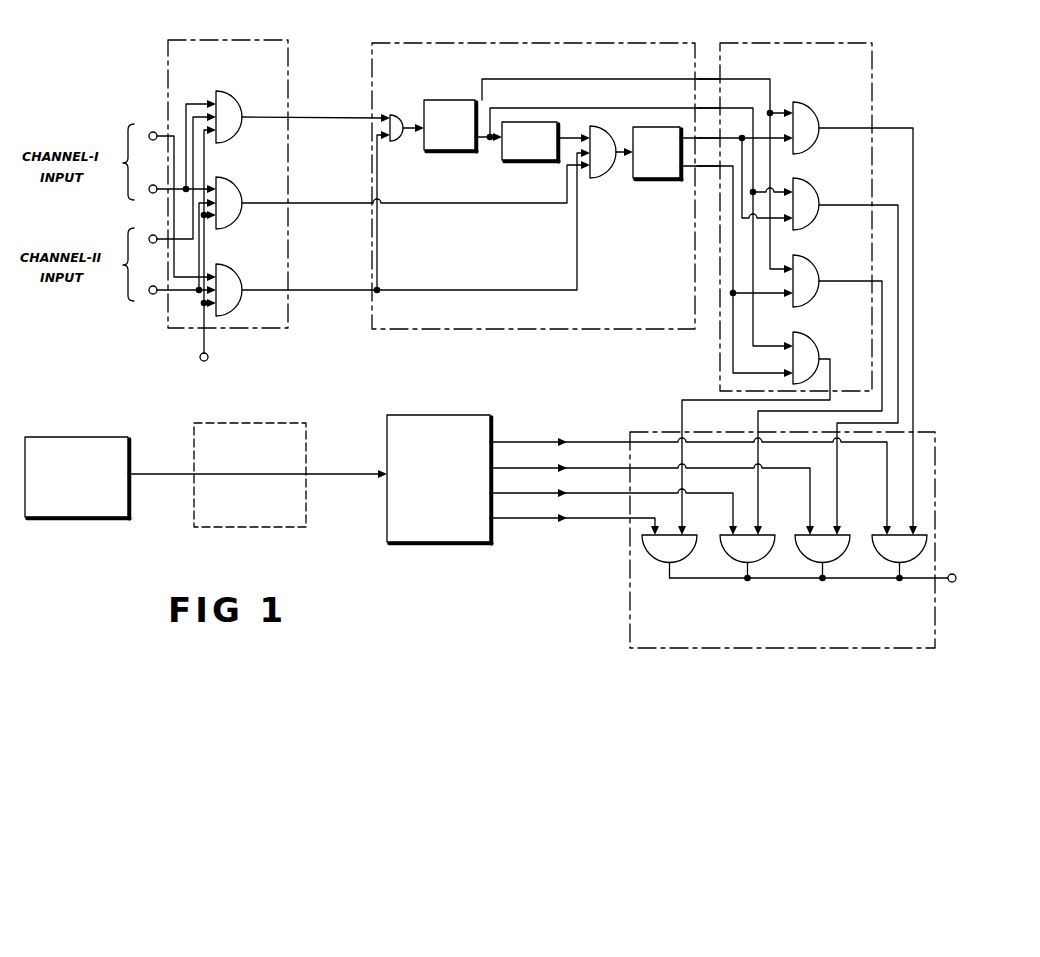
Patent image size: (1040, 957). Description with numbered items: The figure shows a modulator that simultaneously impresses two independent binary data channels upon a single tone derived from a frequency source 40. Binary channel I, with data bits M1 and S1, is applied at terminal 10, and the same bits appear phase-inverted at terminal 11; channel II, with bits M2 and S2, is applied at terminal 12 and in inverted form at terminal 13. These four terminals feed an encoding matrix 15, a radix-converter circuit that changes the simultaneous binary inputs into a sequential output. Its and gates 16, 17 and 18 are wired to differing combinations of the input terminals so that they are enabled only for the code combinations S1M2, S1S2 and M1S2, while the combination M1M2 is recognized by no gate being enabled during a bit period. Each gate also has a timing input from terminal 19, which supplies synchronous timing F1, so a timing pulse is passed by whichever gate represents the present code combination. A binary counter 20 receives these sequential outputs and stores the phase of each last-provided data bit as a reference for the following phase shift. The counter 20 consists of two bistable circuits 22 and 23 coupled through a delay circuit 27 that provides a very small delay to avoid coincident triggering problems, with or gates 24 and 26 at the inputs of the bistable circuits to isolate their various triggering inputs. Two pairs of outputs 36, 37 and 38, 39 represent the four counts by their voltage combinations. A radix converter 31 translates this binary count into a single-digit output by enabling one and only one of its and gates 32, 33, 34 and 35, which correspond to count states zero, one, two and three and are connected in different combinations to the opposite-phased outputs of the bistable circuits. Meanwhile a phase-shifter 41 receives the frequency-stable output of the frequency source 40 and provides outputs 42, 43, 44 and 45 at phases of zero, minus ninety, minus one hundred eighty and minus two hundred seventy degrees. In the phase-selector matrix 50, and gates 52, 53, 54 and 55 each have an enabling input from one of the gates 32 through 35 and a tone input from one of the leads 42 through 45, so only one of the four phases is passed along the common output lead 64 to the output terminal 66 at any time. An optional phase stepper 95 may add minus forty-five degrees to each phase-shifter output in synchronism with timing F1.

The terminal 10 is at (153, 132).
The terminal 11 is at (153, 185).
The terminal 12 is at (154, 235).
The terminal 13 is at (154, 286).
The encoding matrix 15 is at (268, 87).
The and gate 16 is at (238, 130).
The and gate 17 is at (238, 216).
The and gate 18 is at (238, 303).
The terminal 19 is at (208, 353).
The binary counter 20 is at (646, 324).
The bistable circuit 22 is at (447, 152).
The bistable circuit 23 is at (653, 180).
The or gate 24 is at (395, 141).
The or gate 26 is at (606, 176).
The delay circuit 27 is at (527, 161).
The radix converter 31 is at (849, 96).
The and gate 32 is at (812, 337).
The and gate 33 is at (815, 294).
The and gate 34 is at (815, 217).
The and gate 35 is at (815, 141).
The output 36 is at (717, 79).
The output 37 is at (717, 108).
The output 38 is at (717, 138).
The output 39 is at (717, 166).
The frequency source 40 is at (78, 508).
The phase-shifter 41 is at (438, 507).
The output 42 is at (583, 515).
The output 43 is at (583, 490).
The output 44 is at (583, 465).
The output 45 is at (583, 440).
The phase-selector matrix 50 is at (845, 643).
The and gate 52 is at (654, 558).
The and gate 53 is at (730, 553).
The and gate 54 is at (805, 553).
The and gate 55 is at (882, 553).
The output bus line 64 is at (926, 585).
The output terminal 66 is at (954, 573).
The phase stepper 95 is at (260, 518).